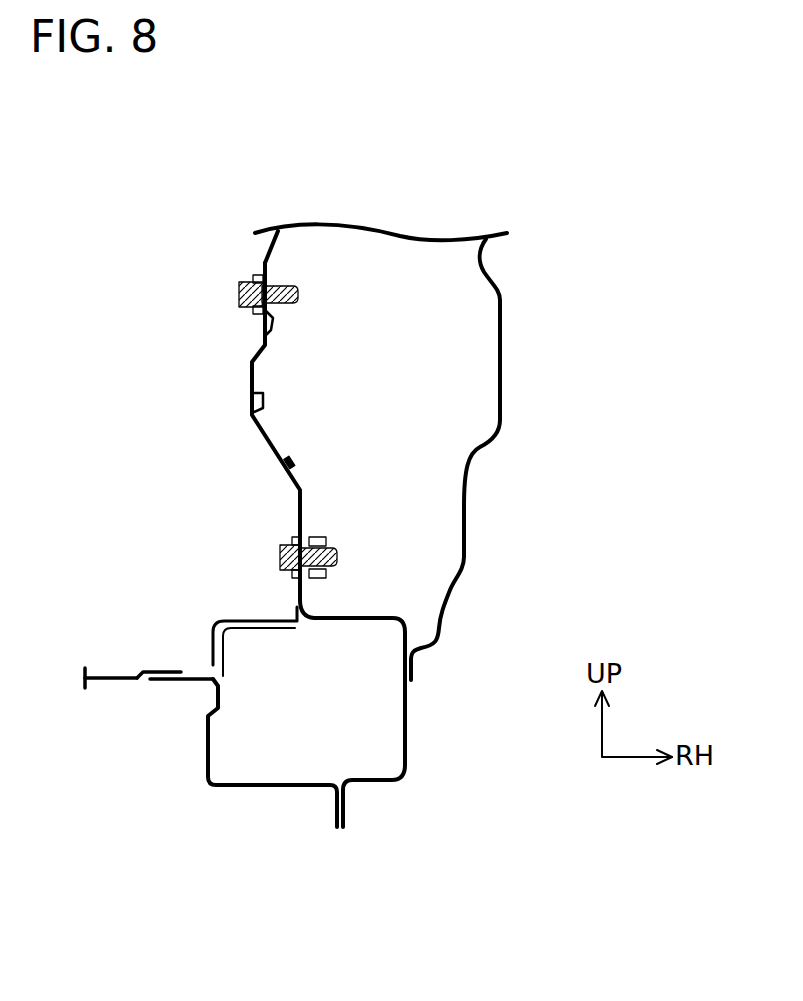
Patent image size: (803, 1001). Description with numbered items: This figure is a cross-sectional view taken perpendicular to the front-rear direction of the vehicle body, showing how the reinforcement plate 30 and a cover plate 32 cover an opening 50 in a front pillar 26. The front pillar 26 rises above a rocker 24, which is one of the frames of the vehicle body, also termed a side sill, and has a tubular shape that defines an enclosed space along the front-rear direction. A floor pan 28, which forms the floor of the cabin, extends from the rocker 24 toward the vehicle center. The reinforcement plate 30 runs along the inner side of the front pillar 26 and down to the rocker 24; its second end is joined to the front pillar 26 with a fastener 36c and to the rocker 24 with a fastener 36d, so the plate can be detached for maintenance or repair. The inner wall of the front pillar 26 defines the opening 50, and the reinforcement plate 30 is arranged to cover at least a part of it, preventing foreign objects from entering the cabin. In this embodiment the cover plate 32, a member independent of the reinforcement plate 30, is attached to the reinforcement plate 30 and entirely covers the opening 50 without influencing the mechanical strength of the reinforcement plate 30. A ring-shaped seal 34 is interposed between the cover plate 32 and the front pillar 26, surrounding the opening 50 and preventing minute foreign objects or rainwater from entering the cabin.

The rocker 24 is at (357, 740).
The front pillar 26 is at (457, 361).
The floor pan 28 is at (108, 676).
The reinforcement plate 30 is at (268, 443).
The cover plate 32 is at (255, 376).
The seal 34 is at (262, 328).
The fastener 36c is at (245, 295).
The fastener 36d is at (280, 556).
The opening 50 is at (290, 463).